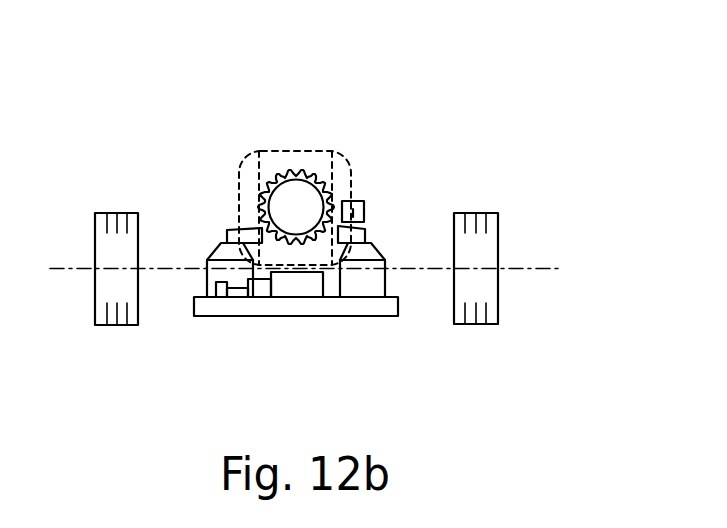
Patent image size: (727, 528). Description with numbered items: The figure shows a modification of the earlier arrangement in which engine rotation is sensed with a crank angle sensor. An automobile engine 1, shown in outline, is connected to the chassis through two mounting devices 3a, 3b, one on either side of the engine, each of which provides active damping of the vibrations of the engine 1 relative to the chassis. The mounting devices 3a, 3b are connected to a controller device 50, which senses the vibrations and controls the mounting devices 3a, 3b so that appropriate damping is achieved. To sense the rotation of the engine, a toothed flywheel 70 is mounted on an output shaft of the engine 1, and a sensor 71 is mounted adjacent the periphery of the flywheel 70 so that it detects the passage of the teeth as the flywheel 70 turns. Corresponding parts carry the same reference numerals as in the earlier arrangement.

The engine 1 is at (273, 152).
The toothed flywheel 70 is at (311, 189).
The sensor 71 is at (364, 212).
The mounting device 3a is at (207, 280).
The mounting device 3b is at (375, 277).
The controller device 50 is at (292, 289).